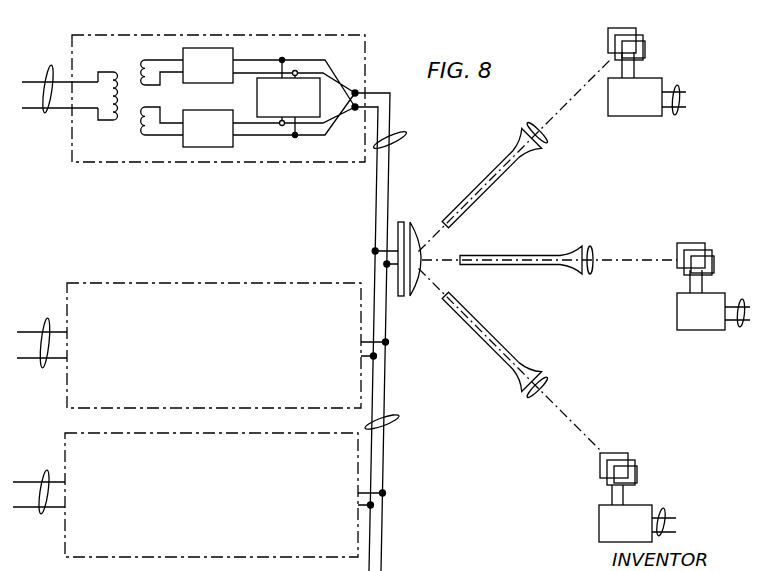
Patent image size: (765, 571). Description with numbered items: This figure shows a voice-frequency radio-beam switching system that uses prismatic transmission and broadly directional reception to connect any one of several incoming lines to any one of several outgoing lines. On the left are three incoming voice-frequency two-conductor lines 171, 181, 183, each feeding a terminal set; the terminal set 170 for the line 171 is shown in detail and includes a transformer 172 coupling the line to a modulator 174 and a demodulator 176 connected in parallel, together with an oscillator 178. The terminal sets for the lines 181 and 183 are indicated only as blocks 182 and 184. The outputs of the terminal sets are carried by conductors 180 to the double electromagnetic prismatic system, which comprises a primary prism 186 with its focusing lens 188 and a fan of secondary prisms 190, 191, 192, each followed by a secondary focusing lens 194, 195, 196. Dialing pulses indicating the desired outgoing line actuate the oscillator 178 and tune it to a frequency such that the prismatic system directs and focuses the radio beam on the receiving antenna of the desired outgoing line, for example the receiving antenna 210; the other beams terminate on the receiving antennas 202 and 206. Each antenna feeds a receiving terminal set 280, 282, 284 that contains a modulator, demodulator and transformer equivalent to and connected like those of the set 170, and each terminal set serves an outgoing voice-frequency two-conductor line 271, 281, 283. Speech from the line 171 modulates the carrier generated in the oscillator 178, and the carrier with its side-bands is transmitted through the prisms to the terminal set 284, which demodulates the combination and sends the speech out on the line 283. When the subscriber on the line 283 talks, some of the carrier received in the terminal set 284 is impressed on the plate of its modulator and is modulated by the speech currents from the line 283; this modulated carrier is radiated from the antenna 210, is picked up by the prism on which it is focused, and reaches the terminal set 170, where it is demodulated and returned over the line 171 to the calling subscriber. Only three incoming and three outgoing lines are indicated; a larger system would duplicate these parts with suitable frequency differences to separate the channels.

The terminal set 170 is at (165, 35).
The incoming voice frequency two-conductor line 171 is at (52, 68).
The transformer 172 is at (128, 60).
The modulator 174 is at (230, 54).
The demodulator 176 is at (228, 142).
The oscillator 178 is at (257, 91).
The conductors 180 is at (400, 137).
The incoming voice frequency two-conductor line 181 is at (46, 320).
The circuit block 182 is at (165, 283).
The incoming voice frequency two-conductor line 183 is at (48, 474).
The circuit block 184 is at (163, 433).
The primary prism 186 is at (400, 222).
The focusing lens 188 is at (413, 297).
The secondary prism 190 is at (488, 332).
The secondary prism 191 is at (494, 255).
The secondary prism 192 is at (489, 192).
The secondary focusing lens 194 is at (531, 396).
The secondary focusing lens 195 is at (594, 250).
The secondary focusing lens 196 is at (538, 126).
The receiving antenna 202 is at (638, 38).
The receiving antenna 206 is at (691, 243).
The receiving antenna 210 is at (617, 453).
The outgoing voice frequency two-conductor line 271 is at (675, 116).
The terminal set 280 is at (623, 118).
The outgoing voice frequency two-conductor line 281 is at (739, 318).
The terminal set 282 is at (692, 331).
The outgoing voice frequency two-conductor line 283 is at (664, 510).
The receiving terminal set 284 is at (599, 527).